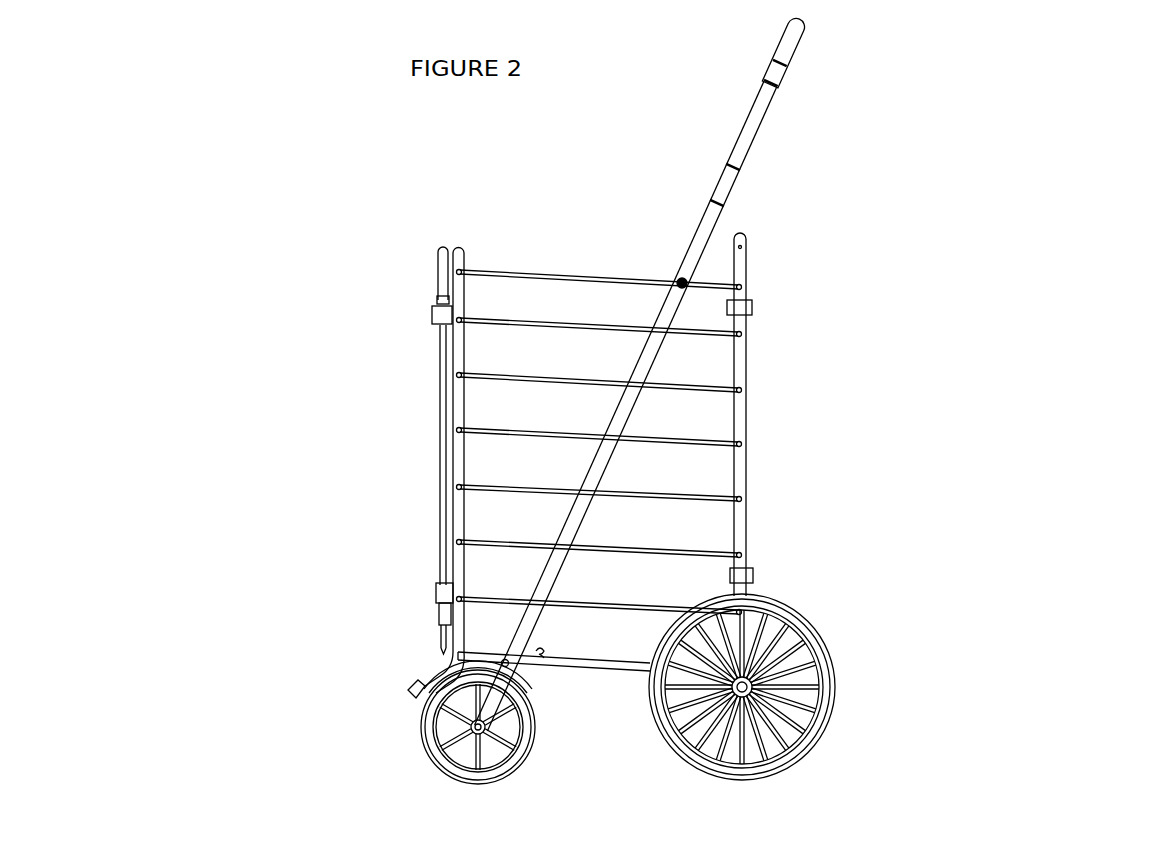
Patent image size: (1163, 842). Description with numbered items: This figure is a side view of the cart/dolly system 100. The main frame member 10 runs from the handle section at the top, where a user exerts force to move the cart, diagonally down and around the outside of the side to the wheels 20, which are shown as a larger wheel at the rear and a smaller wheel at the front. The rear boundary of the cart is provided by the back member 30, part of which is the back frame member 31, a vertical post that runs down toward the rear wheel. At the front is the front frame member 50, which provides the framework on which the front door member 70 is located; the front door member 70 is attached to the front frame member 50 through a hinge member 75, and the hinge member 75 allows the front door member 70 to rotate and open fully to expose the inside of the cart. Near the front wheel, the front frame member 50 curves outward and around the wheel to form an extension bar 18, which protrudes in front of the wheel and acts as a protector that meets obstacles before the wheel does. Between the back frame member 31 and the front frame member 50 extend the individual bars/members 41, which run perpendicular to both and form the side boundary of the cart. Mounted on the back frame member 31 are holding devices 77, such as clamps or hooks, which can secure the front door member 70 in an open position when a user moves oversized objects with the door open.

The cart/dolly system 100 is at (1030, 371).
The main frame member 10 is at (806, 50).
The back member 30 is at (763, 352).
The back frame member 31 is at (744, 415).
The individual bars/members 41 is at (691, 446).
The holding devices 77 is at (758, 307).
The front door member 70 is at (433, 280).
The front frame member 50 is at (456, 403).
The hinge member 75 is at (434, 598).
The wheels 20 is at (648, 738).
The extension bar 18 is at (416, 690).